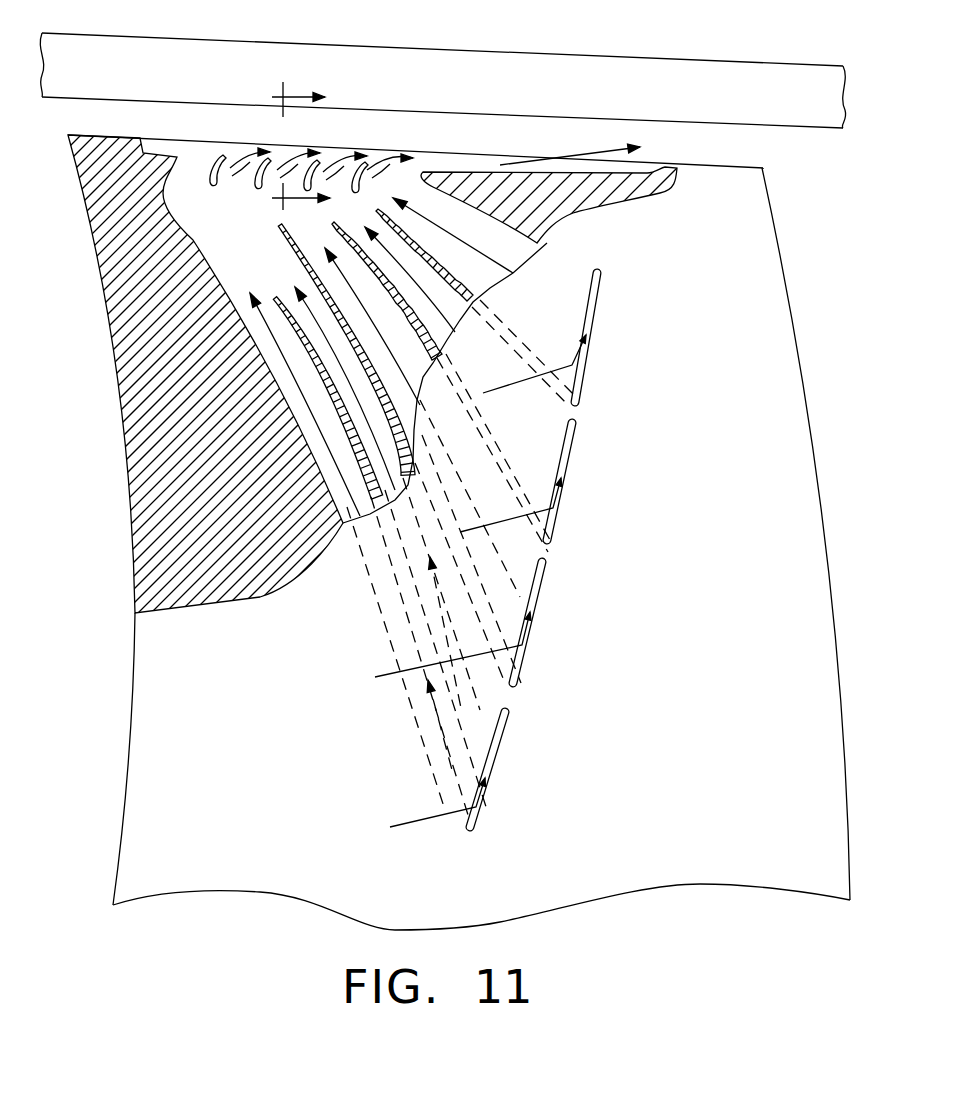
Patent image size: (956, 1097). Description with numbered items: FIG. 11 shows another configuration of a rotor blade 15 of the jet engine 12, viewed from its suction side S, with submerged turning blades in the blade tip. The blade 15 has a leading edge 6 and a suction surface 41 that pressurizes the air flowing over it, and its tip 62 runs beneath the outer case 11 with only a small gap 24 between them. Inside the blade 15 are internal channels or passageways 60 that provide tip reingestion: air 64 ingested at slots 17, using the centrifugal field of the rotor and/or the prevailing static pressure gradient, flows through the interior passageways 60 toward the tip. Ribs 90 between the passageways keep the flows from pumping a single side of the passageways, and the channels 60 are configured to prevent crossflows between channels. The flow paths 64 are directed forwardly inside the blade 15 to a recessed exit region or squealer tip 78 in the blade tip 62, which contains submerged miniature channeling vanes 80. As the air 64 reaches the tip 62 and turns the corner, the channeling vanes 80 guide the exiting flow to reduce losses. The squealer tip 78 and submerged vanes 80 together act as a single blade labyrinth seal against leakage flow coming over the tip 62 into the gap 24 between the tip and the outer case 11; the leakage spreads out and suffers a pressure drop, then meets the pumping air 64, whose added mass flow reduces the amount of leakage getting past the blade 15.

The leading edge 6 is at (130, 727).
The outer case 11 is at (500, 45).
The jet engine 12 is at (301, 150).
The blade 15 is at (395, 889).
The slots 17 is at (600, 288).
The gap 24 is at (760, 148).
The suction surface 41 is at (797, 398).
The internal channels or passageways 60 is at (562, 280).
The tip 62 is at (98, 135).
The air flow 64 is at (600, 147).
The squealer tip 78 is at (473, 155).
The channeling vanes 80 is at (258, 187).
The ribs 90 is at (392, 633).
The suction side S is at (240, 710).